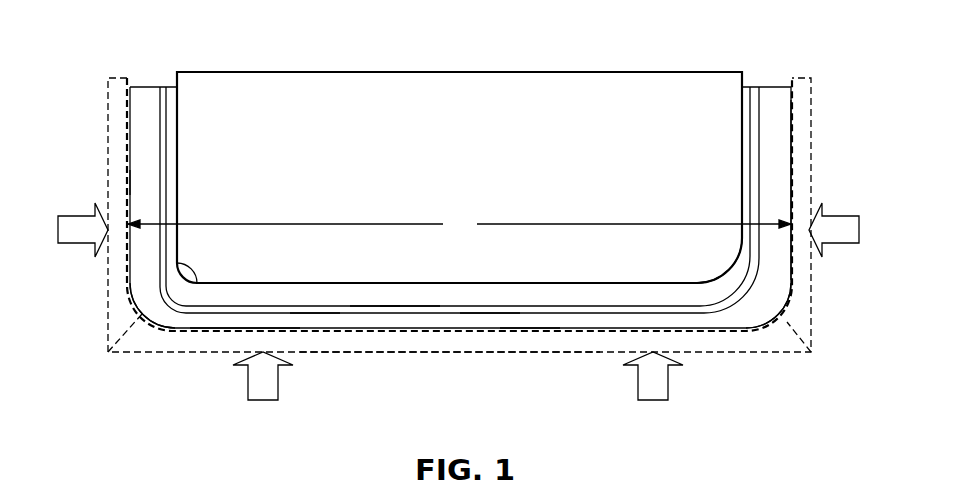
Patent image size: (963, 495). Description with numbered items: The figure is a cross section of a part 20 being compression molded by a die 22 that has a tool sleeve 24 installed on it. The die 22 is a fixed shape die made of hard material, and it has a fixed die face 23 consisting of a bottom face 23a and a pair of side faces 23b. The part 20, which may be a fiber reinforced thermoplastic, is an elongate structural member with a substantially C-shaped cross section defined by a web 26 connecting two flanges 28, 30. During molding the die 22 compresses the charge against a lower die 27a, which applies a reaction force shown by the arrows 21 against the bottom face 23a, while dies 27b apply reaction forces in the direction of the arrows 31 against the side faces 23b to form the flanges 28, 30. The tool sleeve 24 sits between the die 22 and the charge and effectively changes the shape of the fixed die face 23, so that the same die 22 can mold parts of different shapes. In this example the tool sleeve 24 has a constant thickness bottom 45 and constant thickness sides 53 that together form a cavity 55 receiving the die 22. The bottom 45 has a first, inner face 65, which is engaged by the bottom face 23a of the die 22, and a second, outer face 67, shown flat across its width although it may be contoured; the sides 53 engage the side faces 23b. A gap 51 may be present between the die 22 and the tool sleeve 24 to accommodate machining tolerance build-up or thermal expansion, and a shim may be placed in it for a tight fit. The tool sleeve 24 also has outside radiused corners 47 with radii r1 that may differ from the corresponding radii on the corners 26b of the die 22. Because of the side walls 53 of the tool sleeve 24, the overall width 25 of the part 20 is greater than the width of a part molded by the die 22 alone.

The part 20 is at (147, 148).
The arrows 21 is at (652, 383).
The die 22 is at (453, 153).
The fixed die face 23 is at (318, 287).
The bottom face 23a is at (378, 287).
The side faces 23b is at (174, 137).
The tool sleeve 24 is at (762, 86).
The overall width 25 is at (459, 224).
The web 26 is at (220, 322).
The corners 26b is at (727, 271).
The lower die 27a is at (735, 353).
The dies 27b is at (107, 328).
The flange 28 is at (147, 182).
The flange 30 is at (780, 118).
The arrows 31 is at (75, 233).
The bottom 45 is at (428, 304).
The outside radiused corners 47 is at (174, 313).
The gap 51 is at (173, 84).
The sides 53 is at (163, 202).
The cavity 55 is at (566, 295).
The inner face 65 is at (527, 319).
The outer face 67 is at (503, 311).
The radii r1 is at (170, 300).